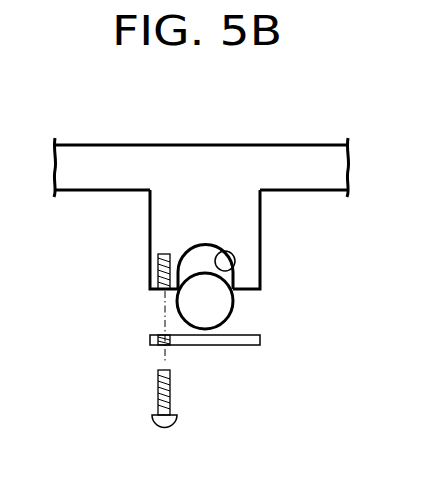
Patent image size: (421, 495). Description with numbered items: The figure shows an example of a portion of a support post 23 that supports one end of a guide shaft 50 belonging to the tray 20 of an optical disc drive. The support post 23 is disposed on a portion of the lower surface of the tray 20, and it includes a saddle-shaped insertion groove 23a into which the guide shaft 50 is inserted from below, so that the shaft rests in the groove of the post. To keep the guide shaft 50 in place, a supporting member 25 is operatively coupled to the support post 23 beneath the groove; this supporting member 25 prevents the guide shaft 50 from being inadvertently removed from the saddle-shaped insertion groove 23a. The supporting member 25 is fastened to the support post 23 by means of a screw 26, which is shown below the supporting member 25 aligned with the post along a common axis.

The tray 20 is at (103, 178).
The support post 23 is at (260, 221).
The saddle-shaped insertion groove 23a is at (228, 268).
The guide shaft 50 is at (232, 303).
The supporting member 25 is at (242, 345).
The screw 26 is at (165, 428).